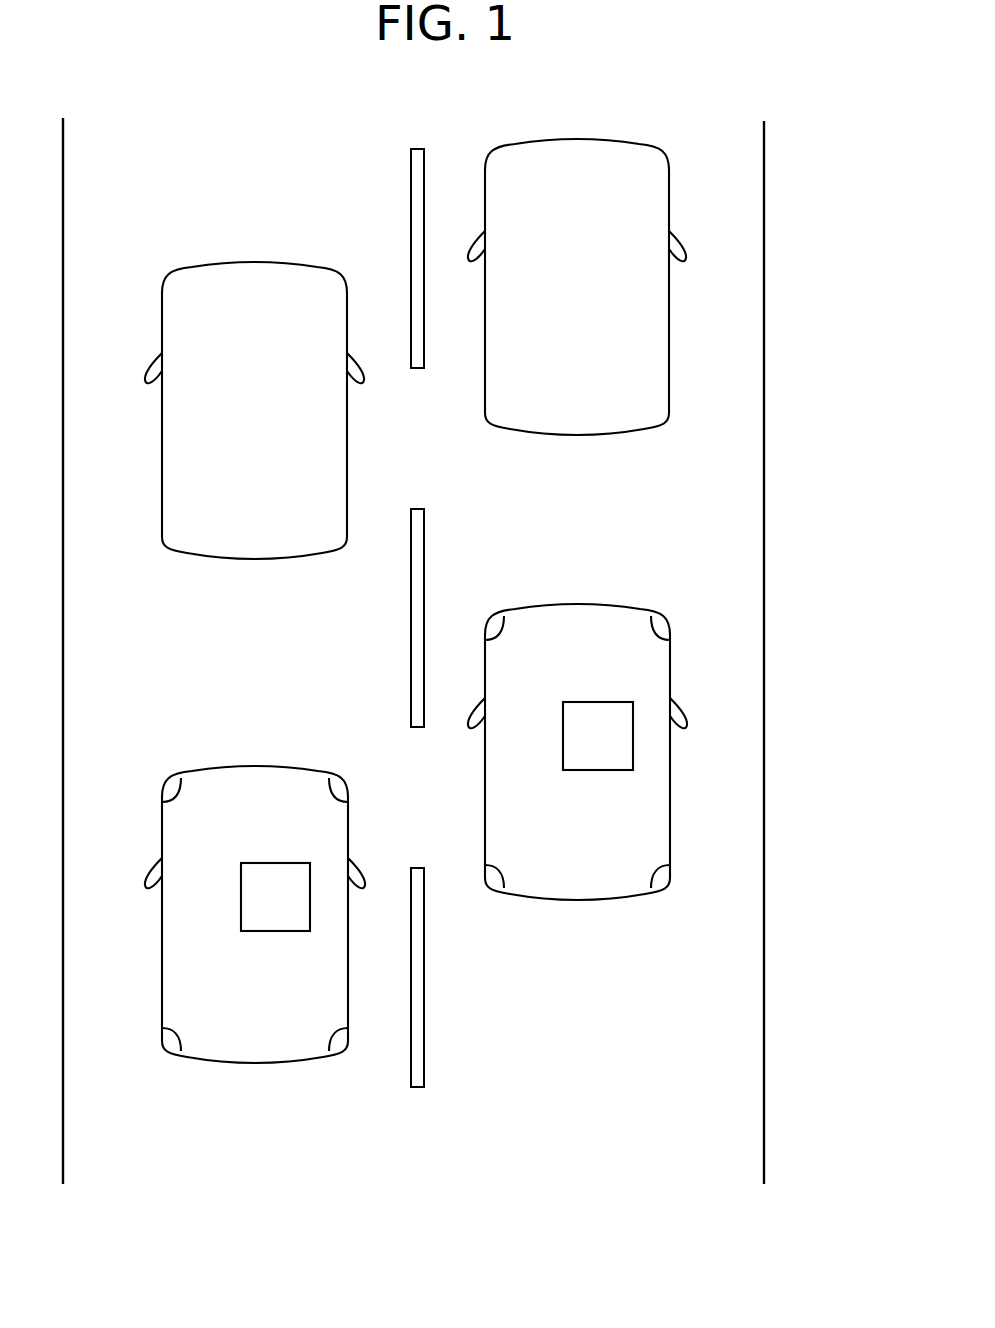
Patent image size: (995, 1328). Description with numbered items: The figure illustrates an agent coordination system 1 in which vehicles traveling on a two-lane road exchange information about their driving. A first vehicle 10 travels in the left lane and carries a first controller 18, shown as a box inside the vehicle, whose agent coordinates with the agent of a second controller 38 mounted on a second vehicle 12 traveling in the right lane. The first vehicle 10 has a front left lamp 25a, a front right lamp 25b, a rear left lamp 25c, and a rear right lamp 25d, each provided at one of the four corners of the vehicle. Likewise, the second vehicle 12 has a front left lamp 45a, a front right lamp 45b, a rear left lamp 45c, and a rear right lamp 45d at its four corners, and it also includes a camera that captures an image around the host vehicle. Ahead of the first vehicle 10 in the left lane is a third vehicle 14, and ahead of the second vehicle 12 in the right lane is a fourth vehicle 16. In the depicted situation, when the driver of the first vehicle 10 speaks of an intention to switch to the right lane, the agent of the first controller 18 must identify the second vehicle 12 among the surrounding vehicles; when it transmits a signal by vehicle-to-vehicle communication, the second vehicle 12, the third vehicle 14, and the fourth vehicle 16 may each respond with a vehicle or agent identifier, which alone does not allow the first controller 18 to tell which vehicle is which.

The agent coordination system 1 is at (421, 1250).
The first vehicle 10 is at (316, 978).
The second vehicle 12 is at (645, 808).
The third vehicle 14 is at (317, 467).
The fourth vehicle 16 is at (643, 346).
The first controller 18 is at (310, 908).
The front left lamp 25a is at (165, 783).
The front right lamp 25b is at (343, 783).
The rear left lamp 25c is at (163, 1047).
The rear right lamp 25d is at (343, 1047).
The second controller 38 is at (633, 745).
The front left lamp 45a is at (492, 622).
The front right lamp 45b is at (663, 622).
The rear left lamp 45c is at (485, 887).
The rear right lamp 45d is at (667, 887).